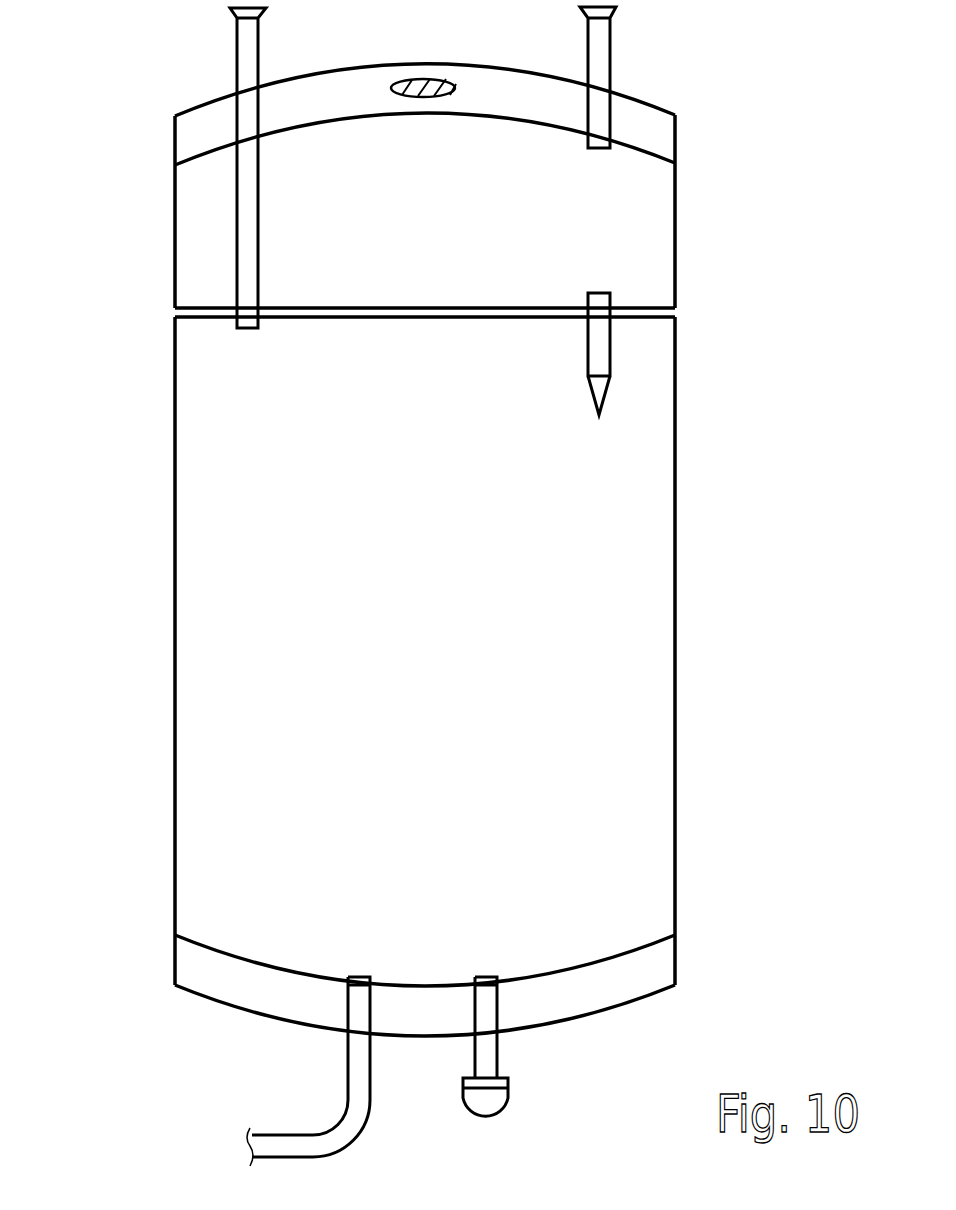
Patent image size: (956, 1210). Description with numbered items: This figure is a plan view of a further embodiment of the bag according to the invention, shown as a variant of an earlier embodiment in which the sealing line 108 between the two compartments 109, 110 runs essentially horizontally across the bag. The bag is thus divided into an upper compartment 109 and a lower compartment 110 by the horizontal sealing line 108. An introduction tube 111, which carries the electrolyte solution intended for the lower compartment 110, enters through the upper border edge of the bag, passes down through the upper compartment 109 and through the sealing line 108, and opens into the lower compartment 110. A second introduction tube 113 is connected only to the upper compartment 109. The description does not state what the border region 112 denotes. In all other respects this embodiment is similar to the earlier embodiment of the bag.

The sealing line 108 is at (200, 318).
The compartment 109 is at (175, 225).
The compartment 110 is at (175, 433).
The introduction tube 111 is at (237, 42).
The top dome 112 is at (175, 138).
The second introduction tube 113 is at (612, 50).